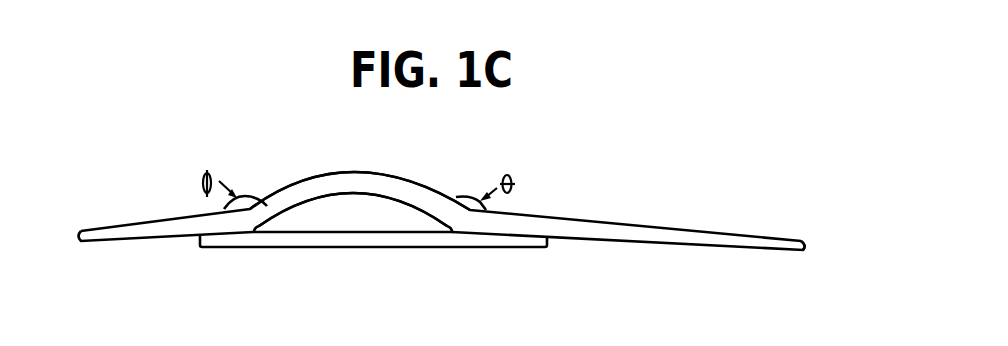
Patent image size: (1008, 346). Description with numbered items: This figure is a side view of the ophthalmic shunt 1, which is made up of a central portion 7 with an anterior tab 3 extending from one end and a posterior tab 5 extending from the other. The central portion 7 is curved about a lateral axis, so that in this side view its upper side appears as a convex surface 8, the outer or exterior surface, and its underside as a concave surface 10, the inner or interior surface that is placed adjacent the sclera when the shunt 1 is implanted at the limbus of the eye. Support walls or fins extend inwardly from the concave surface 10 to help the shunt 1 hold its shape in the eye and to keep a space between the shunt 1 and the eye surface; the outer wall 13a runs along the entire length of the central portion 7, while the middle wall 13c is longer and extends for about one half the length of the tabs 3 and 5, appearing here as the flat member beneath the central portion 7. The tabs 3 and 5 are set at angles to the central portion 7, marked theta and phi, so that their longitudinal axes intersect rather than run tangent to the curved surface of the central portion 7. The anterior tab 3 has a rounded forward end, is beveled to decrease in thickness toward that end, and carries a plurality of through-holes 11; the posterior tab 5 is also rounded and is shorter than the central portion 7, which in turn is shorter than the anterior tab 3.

The shunt 1 is at (579, 160).
The anterior tab 3 is at (622, 243).
The posterior tab 5 is at (141, 237).
The central portion 7 is at (374, 176).
The convex surface 8 is at (326, 173).
The concave surface 10 is at (327, 198).
The through-holes 11 is at (747, 238).
The outer wall 13a is at (419, 204).
The middle wall 13c is at (370, 248).